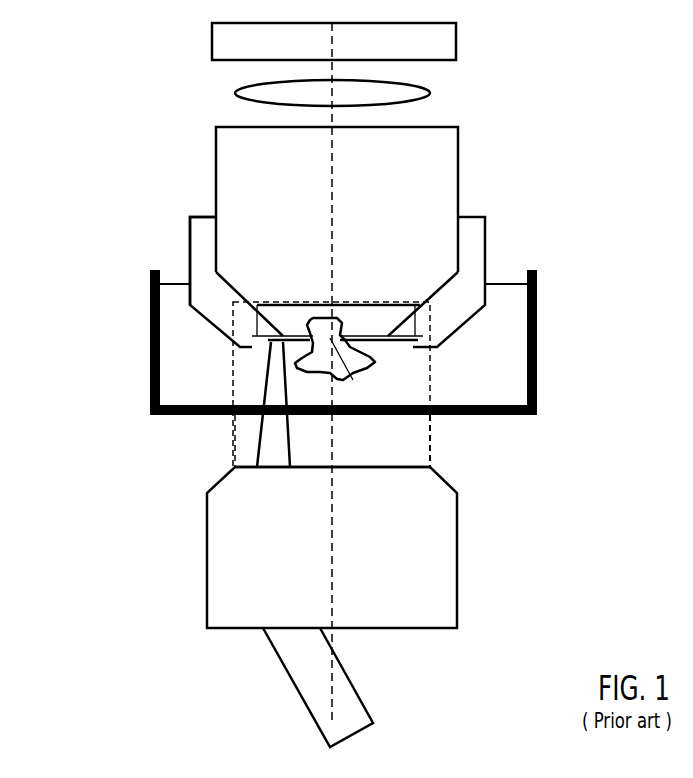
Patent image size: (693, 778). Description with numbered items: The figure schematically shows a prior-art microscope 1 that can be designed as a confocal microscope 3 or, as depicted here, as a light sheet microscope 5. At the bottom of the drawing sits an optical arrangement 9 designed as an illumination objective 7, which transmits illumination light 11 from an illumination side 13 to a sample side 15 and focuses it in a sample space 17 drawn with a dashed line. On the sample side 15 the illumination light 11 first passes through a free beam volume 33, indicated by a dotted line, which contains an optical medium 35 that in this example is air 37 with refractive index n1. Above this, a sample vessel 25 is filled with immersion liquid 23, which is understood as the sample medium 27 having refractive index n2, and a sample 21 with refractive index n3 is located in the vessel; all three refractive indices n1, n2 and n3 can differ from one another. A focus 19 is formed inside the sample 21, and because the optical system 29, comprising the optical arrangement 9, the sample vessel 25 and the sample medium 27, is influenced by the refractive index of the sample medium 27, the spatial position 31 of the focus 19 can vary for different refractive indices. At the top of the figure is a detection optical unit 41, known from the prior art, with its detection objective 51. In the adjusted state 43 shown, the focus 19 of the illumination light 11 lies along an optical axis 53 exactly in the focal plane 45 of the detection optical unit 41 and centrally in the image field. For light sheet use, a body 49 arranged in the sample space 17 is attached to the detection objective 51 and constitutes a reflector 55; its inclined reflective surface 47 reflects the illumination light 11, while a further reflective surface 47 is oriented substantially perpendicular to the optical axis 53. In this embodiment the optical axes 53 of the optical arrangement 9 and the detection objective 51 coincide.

The microscope 1 is at (354, 384).
The confocal microscope 3 is at (354, 384).
The light sheet microscope 5 is at (563, 84).
The illumination objective 7 is at (374, 547).
The optical arrangement 9 is at (457, 537).
The illumination light 11 is at (372, 705).
The illumination side 13 is at (465, 656).
The sample side 15 is at (444, 465).
The sample space 17 is at (430, 452).
The focus 19 is at (483, 370).
The sample 21 is at (363, 363).
The immersion liquid 23 is at (409, 368).
The sample vessel 25 is at (537, 307).
The sample medium 27 is at (409, 368).
The optical system 29 is at (145, 262).
The spatial position 31 is at (353, 380).
The free beam volume 33 is at (430, 432).
The optical medium 35 is at (409, 368).
The air 37 is at (403, 456).
The detection optical unit 41 is at (185, 22).
The adjusted state 43 is at (573, 119).
The focal plane 45 is at (418, 335).
The reflective surface 47 is at (252, 346).
The body 49 is at (128, 261).
The detection objective 51 is at (215, 202).
The optical axis 53 is at (334, 161).
The reflector 55 is at (202, 268).
The refractive index n1 is at (248, 445).
The refractive index n2 is at (517, 295).
The refractive index n3 is at (340, 324).